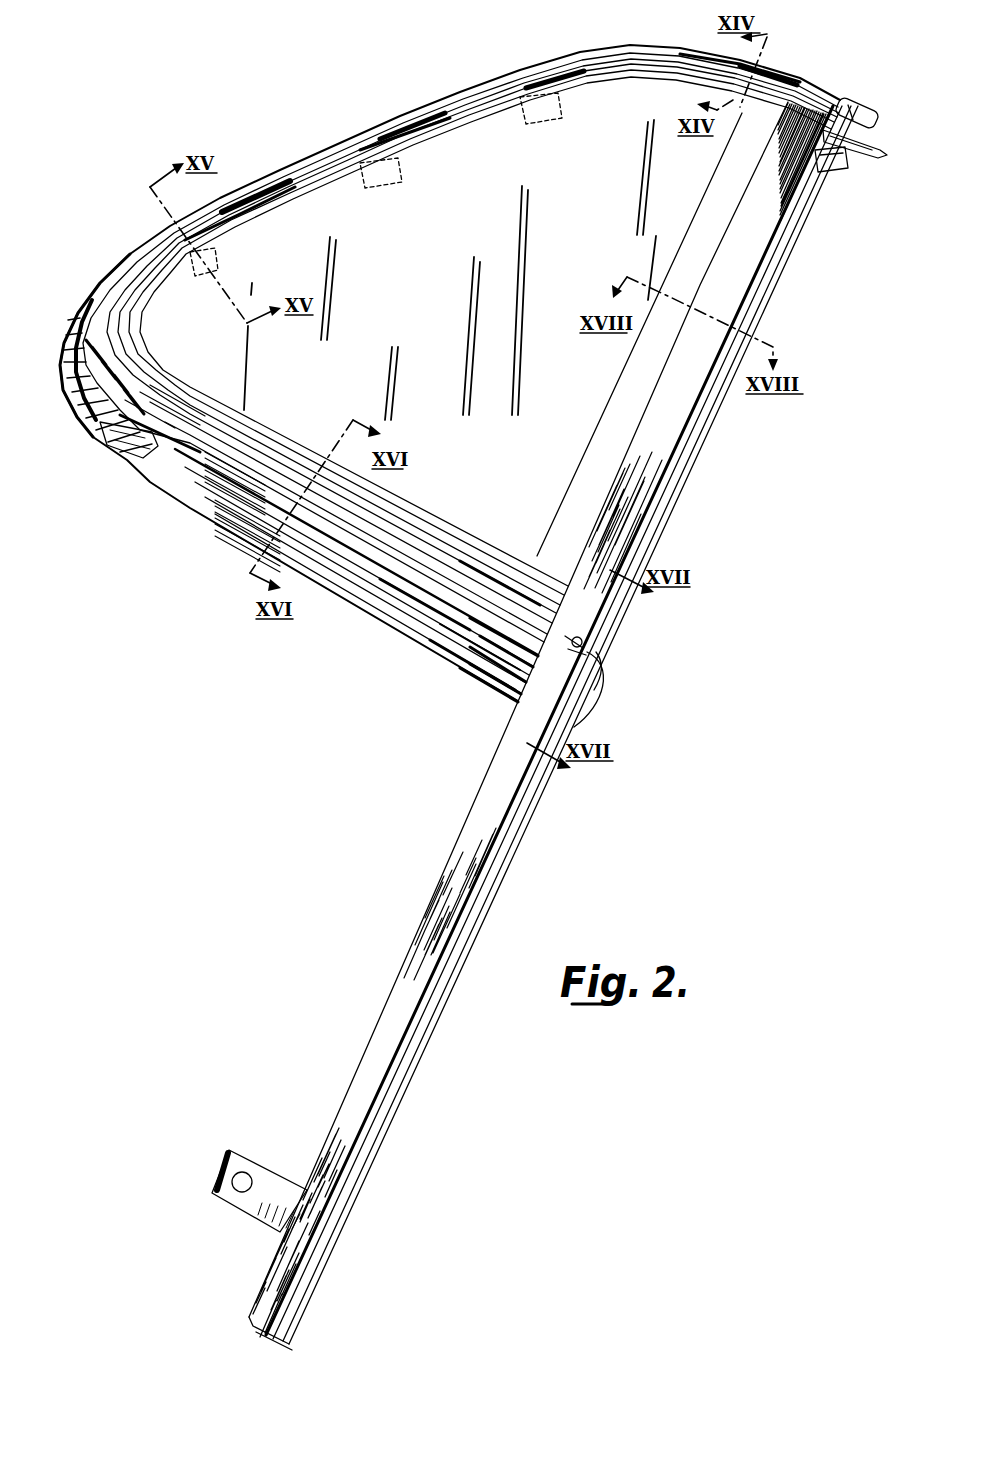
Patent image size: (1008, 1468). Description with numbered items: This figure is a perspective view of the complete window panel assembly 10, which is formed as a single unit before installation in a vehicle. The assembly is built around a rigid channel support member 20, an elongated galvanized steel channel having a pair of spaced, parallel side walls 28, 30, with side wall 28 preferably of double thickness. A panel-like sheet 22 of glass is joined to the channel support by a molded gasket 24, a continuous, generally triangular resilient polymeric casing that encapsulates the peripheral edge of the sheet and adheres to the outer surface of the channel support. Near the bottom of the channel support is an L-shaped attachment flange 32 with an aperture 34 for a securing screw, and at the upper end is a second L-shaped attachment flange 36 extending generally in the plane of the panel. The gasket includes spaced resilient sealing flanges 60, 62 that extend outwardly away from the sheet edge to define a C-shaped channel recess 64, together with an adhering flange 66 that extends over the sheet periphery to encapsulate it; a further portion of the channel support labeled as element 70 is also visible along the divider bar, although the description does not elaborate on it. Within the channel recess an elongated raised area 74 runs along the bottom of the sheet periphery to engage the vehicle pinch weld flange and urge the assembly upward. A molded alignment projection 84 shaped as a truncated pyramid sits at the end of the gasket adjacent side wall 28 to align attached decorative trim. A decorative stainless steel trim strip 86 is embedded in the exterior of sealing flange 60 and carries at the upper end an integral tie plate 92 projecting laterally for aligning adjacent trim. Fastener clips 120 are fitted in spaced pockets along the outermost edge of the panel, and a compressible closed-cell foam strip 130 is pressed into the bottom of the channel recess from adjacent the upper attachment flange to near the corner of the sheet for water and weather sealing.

The panel assembly 10 is at (288, 124).
The channel support member 20 is at (472, 791).
The sheet 22 is at (436, 309).
The molded gasket 24 is at (224, 543).
The side wall 28 is at (500, 848).
The side wall 30 is at (450, 900).
The attachment flange 32 is at (278, 1178).
The aperture 34 is at (243, 1172).
The attachment flange 36 is at (866, 160).
The sealing flange 60 is at (105, 283).
The sealing flange 62 is at (348, 589).
The channel recess 64 is at (225, 464).
The adhering flange 66 is at (462, 117).
The channel web 70 is at (650, 452).
The raised area 74 is at (403, 600).
The alignment projection 84 is at (582, 643).
The trim strip 86 is at (595, 70).
The tie plate 92 is at (866, 99).
The fastener clip 120 is at (198, 290).
The foam strip 130 is at (106, 440).